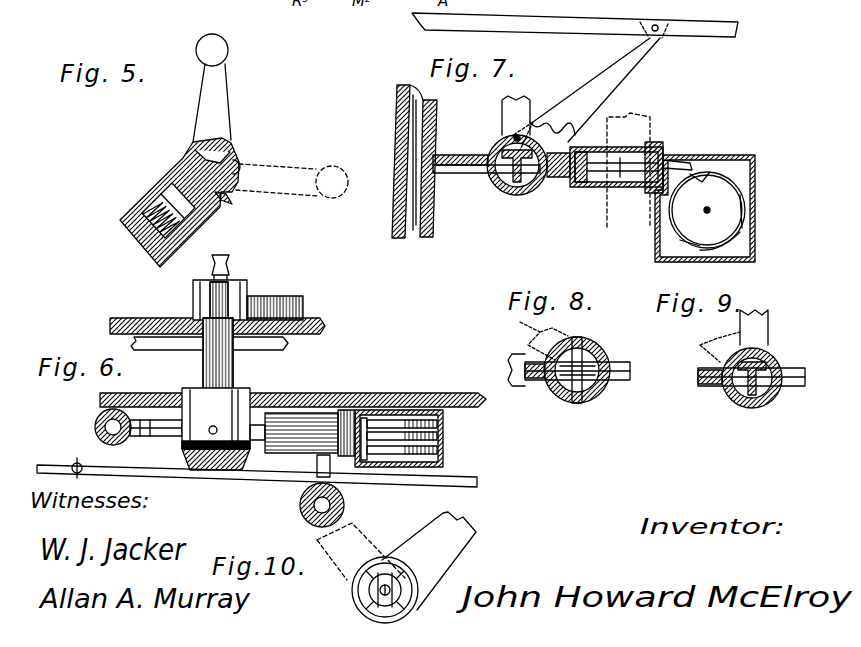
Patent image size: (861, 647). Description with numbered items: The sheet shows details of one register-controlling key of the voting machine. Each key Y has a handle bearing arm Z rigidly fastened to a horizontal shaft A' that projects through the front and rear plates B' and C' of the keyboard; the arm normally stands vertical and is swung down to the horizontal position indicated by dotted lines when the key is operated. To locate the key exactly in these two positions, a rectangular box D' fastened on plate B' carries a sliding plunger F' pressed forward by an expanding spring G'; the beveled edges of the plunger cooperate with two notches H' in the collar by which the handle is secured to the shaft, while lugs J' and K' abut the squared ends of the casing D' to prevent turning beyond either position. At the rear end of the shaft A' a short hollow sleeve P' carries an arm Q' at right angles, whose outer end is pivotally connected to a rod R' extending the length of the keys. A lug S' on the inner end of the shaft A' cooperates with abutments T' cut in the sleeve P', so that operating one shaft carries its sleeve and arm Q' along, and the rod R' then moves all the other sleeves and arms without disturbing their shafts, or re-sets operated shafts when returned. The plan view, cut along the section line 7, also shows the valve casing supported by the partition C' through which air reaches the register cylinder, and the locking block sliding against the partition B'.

In FIG. 5, the handle bearing arm Z is at (270, 116).
In FIG. 7, the handle bearing arm Z is at (516, 118).
In FIG. 6, the handle bearing arm Z is at (231, 268).
In FIG. 8, the handle bearing arm Z is at (501, 368).
In FIG. 9, the handle bearing arm Z is at (754, 327).
In FIG. 5, the key Y is at (241, 128).
In FIG. 5, the lug J' is at (197, 143).
In FIG. 5, the plunger F' is at (154, 182).
In FIG. 5, the expanding spring G' is at (154, 206).
In FIG. 5, the rectangular box D' is at (162, 202).
In FIG. 6, the rectangular box D' is at (275, 296).
In FIG. 5, the lug K' is at (249, 155).
In FIG. 5, the notches H' is at (236, 204).
In FIG. 7, the rod or bar R' is at (575, 19).
In FIG. 7, the arm Q' is at (586, 94).
In FIG. 6, the arm Q' is at (257, 461).
In FIG. 8, the arm Q' is at (538, 335).
In FIG. 9, the arm Q' is at (712, 345).
In FIG. 10, the arm Q' is at (396, 561).
In FIG. 7, the sleeve P' is at (486, 182).
In FIG. 6, the sleeve P' is at (198, 482).
In FIG. 8, the sleeve P' is at (577, 389).
In FIG. 9, the sleeve P' is at (751, 391).
In FIG. 7, the horizontal shaft A' is at (541, 204).
In FIG. 6, the horizontal shaft A' is at (233, 390).
In FIG. 8, the horizontal shaft A' is at (624, 344).
In FIG. 9, the horizontal shaft A' is at (793, 350).
In FIG. 10, the horizontal shaft A' is at (399, 590).
In FIG. 6, the knob housing Z' is at (220, 300).
In FIG. 6, the front plate B' is at (223, 317).
In FIG. 6, the rear plate C' is at (293, 389).
In FIG. 6, the lug S' is at (213, 488).
In FIG. 10, the lug S' is at (395, 624).
In FIG. 6, the section line 7 is at (72, 410).
In FIG. 10, the abutments T' is at (376, 599).